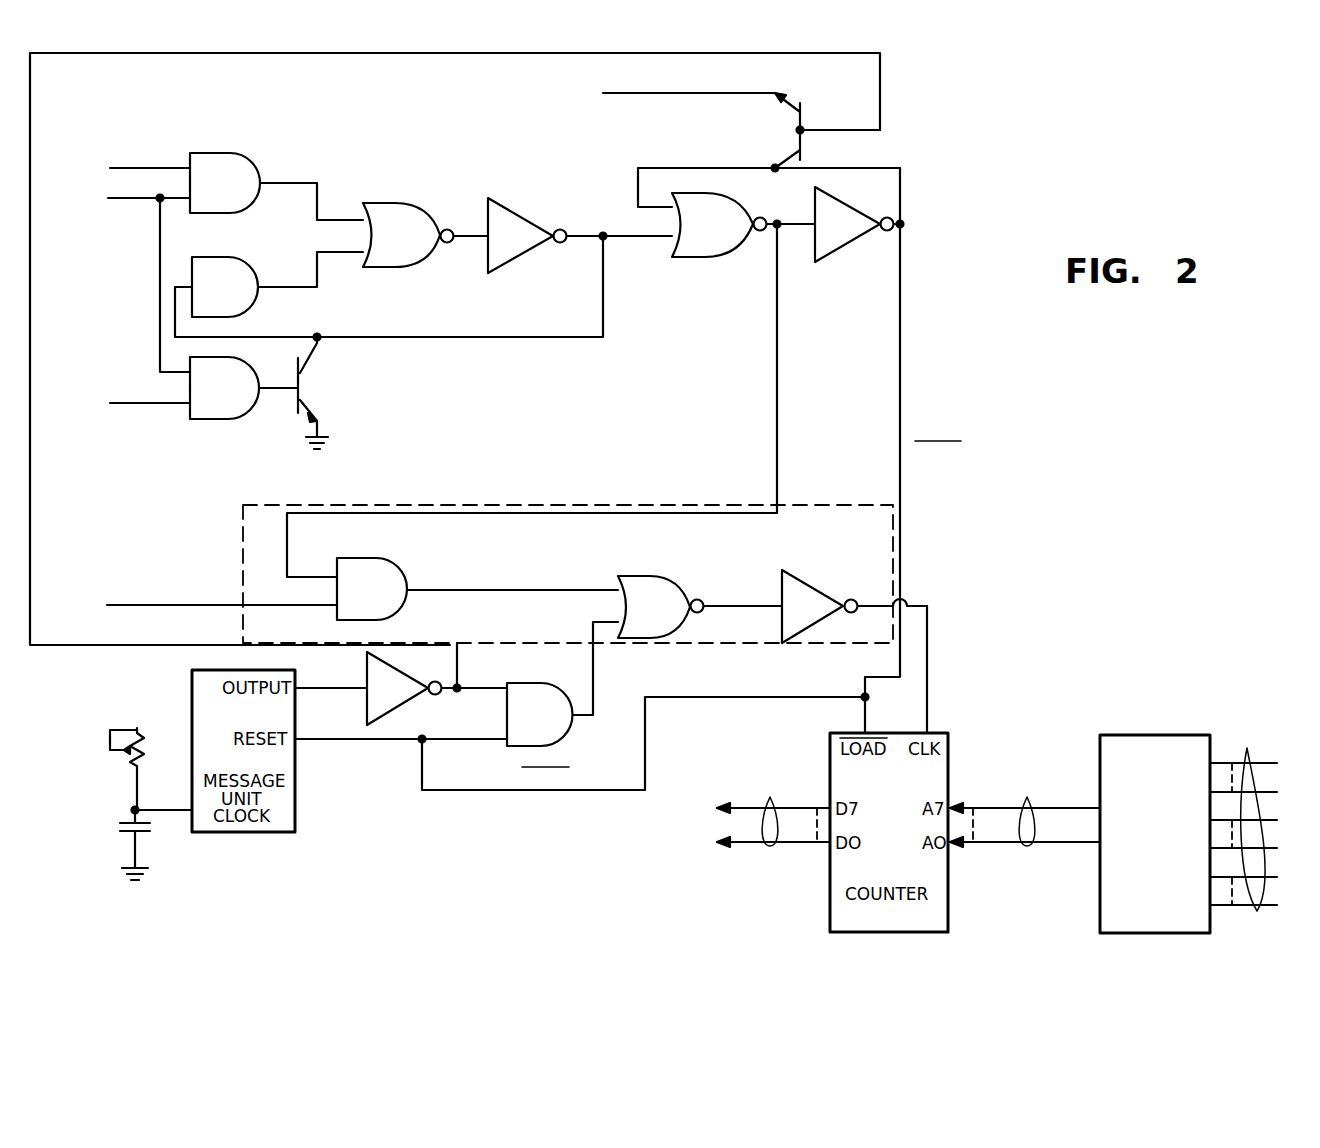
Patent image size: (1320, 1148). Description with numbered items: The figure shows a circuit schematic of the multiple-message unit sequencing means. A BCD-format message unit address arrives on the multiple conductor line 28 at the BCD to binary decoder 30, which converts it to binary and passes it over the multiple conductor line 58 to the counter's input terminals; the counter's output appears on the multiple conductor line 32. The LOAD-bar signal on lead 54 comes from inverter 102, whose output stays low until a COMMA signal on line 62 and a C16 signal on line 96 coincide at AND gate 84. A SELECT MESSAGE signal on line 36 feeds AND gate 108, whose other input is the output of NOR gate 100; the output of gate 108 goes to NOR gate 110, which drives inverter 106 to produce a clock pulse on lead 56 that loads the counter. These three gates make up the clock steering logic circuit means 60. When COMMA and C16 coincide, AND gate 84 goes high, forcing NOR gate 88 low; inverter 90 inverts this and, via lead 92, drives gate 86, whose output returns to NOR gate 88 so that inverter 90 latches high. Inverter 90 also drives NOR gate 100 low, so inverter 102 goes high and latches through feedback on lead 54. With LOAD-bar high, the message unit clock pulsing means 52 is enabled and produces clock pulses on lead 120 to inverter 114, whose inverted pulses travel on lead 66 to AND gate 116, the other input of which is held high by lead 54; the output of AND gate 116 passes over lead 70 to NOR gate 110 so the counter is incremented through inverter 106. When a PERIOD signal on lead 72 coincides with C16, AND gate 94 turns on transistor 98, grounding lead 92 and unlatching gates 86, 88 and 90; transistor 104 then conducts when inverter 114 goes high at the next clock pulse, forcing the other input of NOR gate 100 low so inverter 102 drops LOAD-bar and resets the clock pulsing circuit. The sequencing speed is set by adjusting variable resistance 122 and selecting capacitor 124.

The multiple conductor line 28 is at (1264, 819).
The BCD to binary decoder 30 is at (1122, 735).
The multiple conductor line 32 is at (773, 811).
The select message line 36 is at (160, 605).
The message unit clock pulsing means 52 is at (297, 745).
The lead 54 is at (903, 330).
The lead 56 is at (927, 680).
The multiple conductor line 58 is at (1024, 811).
The clock steering logic circuit means 60 is at (795, 505).
The line 62 is at (138, 168).
The lead 66 is at (457, 648).
The lead 70 is at (777, 370).
The lead 72 is at (115, 403).
The AND gate 84 is at (238, 156).
The gate 86 is at (240, 258).
The NOR gate 88 is at (420, 210).
The inverter 90 is at (517, 213).
The lead 92 is at (508, 337).
The AND gate 94 is at (233, 358).
The line 96 is at (130, 199).
The transistor 98 is at (310, 388).
The NOR gate 100 is at (730, 200).
The inverter 102 is at (845, 205).
The transistor 104 is at (793, 125).
The inverter 106 is at (808, 580).
The AND gate 108 is at (392, 562).
The NOR gate 110 is at (655, 577).
The inverter 114 is at (402, 667).
The AND gate 116 is at (541, 684).
The lead 120 is at (313, 686).
The variable resistance 122 is at (145, 755).
The capacitor 124 is at (115, 825).